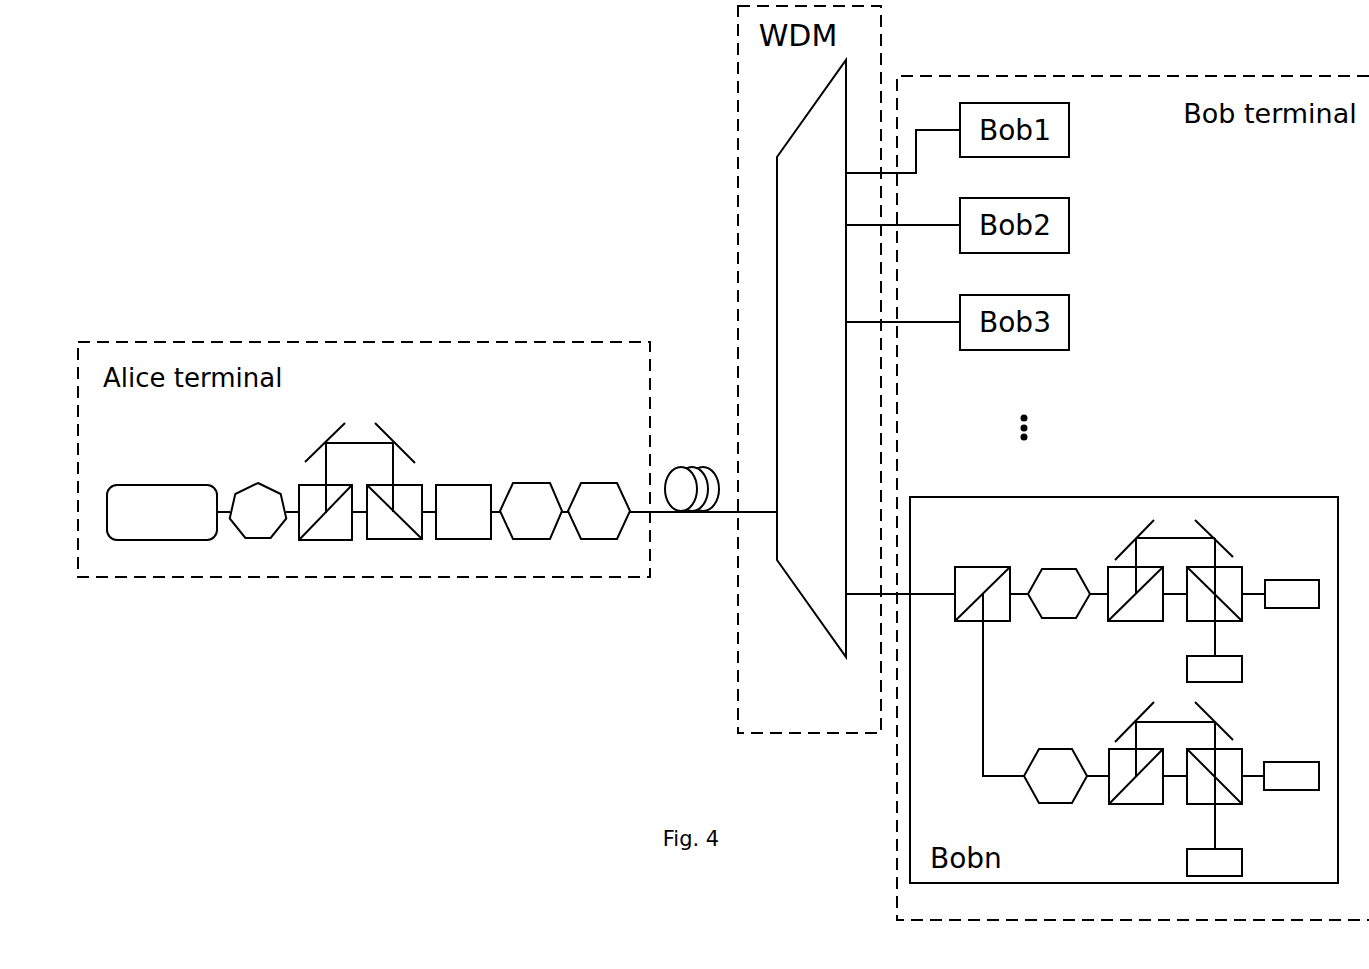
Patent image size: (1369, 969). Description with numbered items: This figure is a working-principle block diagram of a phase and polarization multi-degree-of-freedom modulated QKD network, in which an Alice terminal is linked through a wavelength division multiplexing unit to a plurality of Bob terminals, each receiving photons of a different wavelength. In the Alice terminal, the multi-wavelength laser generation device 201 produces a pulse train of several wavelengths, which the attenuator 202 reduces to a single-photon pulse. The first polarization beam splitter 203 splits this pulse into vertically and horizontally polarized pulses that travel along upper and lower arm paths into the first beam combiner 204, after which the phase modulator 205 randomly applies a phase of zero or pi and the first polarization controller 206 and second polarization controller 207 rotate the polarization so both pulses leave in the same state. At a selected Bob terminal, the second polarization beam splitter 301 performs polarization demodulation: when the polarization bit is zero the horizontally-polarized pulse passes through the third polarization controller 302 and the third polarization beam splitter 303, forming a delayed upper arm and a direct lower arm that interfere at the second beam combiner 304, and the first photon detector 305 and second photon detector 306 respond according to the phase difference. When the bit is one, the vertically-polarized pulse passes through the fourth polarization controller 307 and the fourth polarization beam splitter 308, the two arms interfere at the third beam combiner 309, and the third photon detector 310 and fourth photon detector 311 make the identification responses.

The multi-wavelength laser generation device 201 is at (162, 529).
The attenuator 202 is at (258, 528).
The first polarization beam splitter 203 is at (346, 498).
The first beam combiner 204 is at (394, 498).
The phase modulator 205 is at (463, 529).
The first polarization controller 206 is at (531, 528).
The second polarization controller 207 is at (599, 528).
The second polarization beam splitter 301 is at (982, 609).
The third polarization controller 302 is at (1059, 610).
The third polarization beam splitter 303 is at (1161, 583).
The second beam combiner 304 is at (1214, 588).
The first photon detector 305 is at (1292, 606).
The second photon detector 306 is at (1236, 669).
The fourth polarization controller 307 is at (1055, 792).
The fourth polarization beam splitter 308 is at (1162, 767).
The third beam combiner 309 is at (1214, 775).
The third photon detector 310 is at (1291, 789).
The fourth photon detector 311 is at (1235, 862).